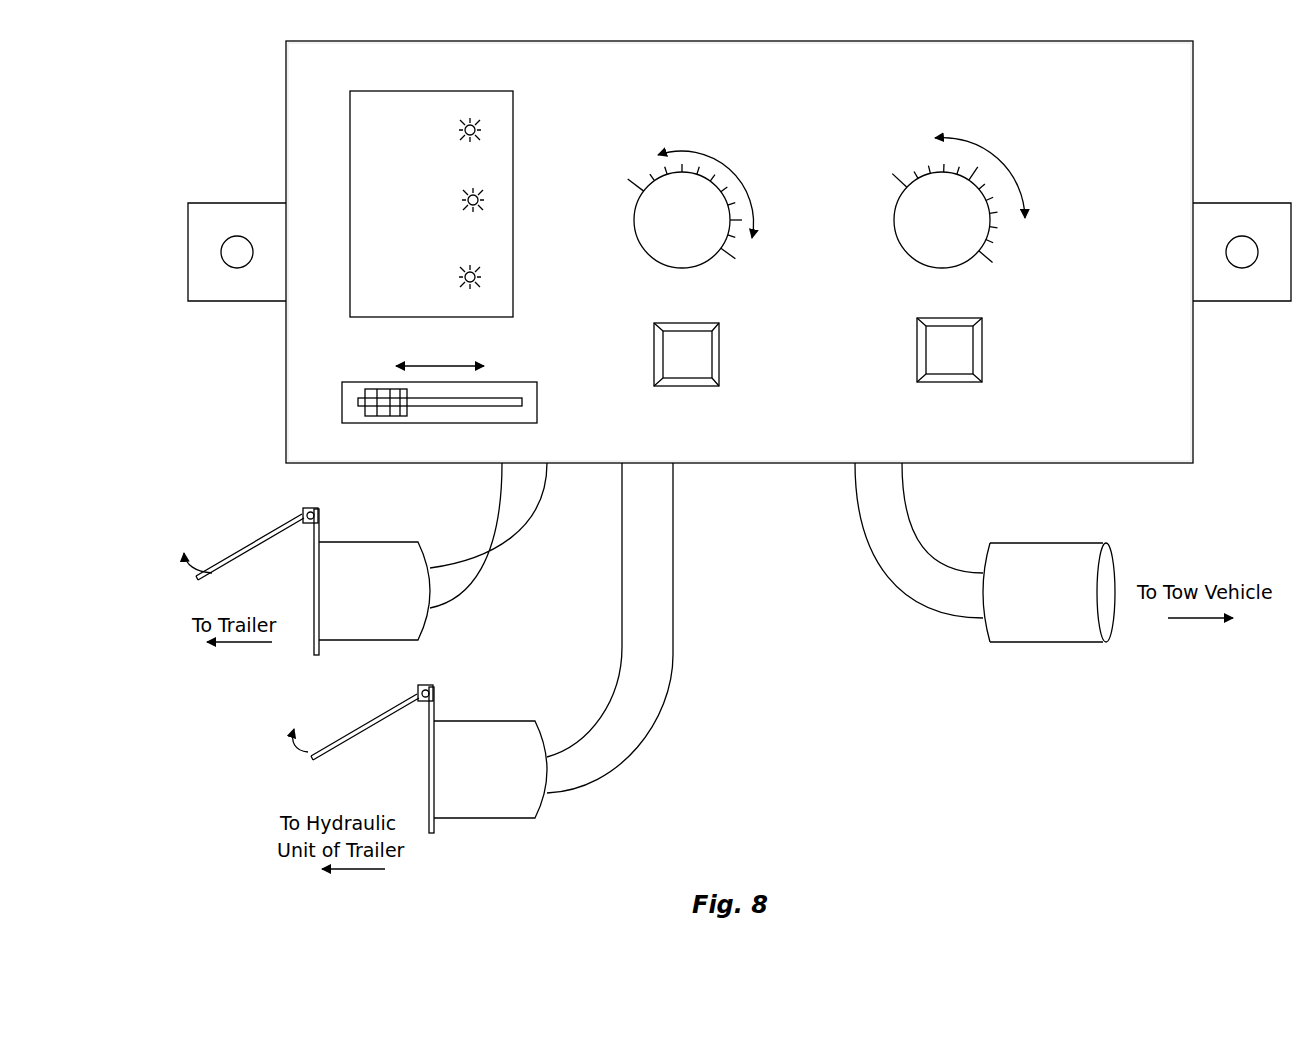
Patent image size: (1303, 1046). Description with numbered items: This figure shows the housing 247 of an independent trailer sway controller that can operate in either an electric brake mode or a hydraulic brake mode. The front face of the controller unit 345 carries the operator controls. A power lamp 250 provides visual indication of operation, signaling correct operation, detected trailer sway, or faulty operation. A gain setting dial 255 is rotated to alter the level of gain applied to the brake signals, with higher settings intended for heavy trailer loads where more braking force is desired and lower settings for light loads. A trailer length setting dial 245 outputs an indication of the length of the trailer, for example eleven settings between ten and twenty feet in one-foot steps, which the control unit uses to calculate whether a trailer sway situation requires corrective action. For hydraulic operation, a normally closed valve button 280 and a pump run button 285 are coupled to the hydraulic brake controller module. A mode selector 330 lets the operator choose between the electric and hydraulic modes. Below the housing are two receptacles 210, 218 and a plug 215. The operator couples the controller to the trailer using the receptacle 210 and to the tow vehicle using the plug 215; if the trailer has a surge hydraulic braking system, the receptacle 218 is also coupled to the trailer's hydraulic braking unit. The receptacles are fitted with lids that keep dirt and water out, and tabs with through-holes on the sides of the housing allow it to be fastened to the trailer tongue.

The control unit housing 345 is at (286, 111).
The housing 247 is at (1193, 106).
The power lamp 250 is at (513, 112).
The gain setting dial 255 is at (658, 258).
The trailer length setting dial 245 is at (916, 258).
The pump run button 285 is at (719, 358).
The normally closed (NC) valve button 280 is at (982, 350).
The mode selector 330 is at (520, 423).
The receptacle 210 is at (406, 640).
The receptacle 218 is at (477, 818).
The plug 215 is at (1027, 642).